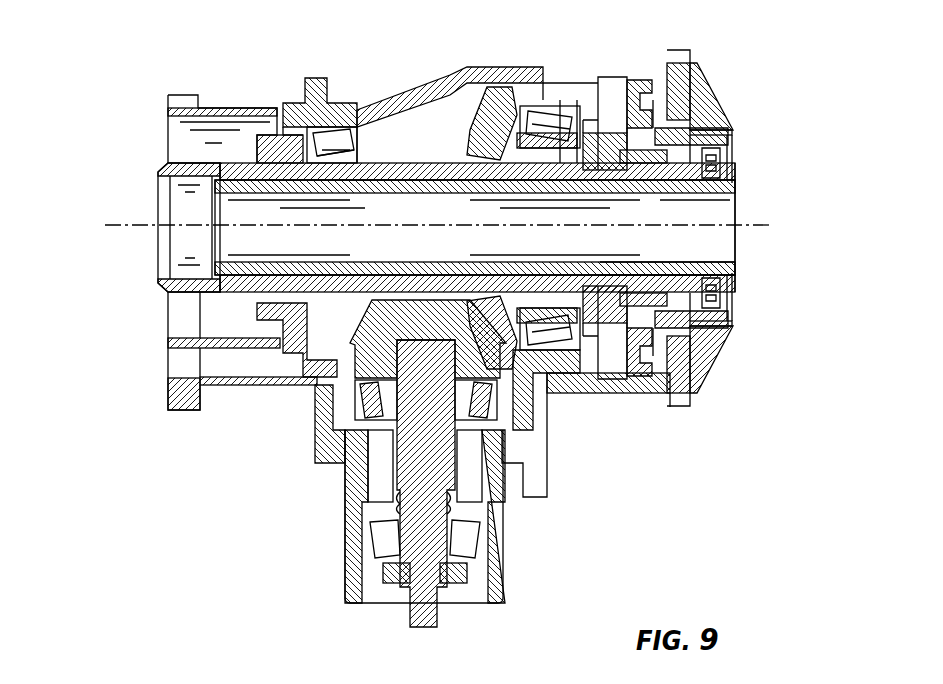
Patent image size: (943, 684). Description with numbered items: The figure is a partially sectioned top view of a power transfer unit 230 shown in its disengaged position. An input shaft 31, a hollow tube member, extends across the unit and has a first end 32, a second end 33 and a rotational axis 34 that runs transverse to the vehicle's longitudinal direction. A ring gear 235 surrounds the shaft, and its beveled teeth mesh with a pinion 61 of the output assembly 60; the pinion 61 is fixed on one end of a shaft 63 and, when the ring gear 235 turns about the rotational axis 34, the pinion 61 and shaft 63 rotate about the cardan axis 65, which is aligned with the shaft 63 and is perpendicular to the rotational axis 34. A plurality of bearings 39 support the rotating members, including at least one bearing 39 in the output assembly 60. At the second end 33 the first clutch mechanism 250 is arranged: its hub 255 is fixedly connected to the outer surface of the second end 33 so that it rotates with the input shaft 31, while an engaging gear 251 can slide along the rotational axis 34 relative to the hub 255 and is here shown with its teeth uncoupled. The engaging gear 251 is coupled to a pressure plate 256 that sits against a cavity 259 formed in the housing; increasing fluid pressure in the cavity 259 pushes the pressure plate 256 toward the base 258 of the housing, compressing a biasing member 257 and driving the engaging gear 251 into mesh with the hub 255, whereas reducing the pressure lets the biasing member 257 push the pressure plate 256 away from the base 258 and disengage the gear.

The power transfer unit 230 is at (180, 450).
The output assembly 60 is at (282, 488).
The cardan axis 65 is at (360, 492).
The shaft 63 is at (442, 448).
The pinion 61 is at (456, 353).
The bearing 39 is at (467, 372).
The input shaft 31 is at (441, 220).
The first end 32 is at (262, 220).
The second end 33 is at (704, 258).
The rotational axis 34 is at (748, 222).
The ring gear 235 is at (492, 132).
The cavity 259 is at (612, 96).
The pressure plate 256 is at (630, 104).
The first clutch mechanism 250 is at (670, 108).
The hub 255 is at (642, 165).
The base 258 is at (692, 328).
The biasing member 257 is at (660, 340).
The engaging gear 251 is at (613, 312).